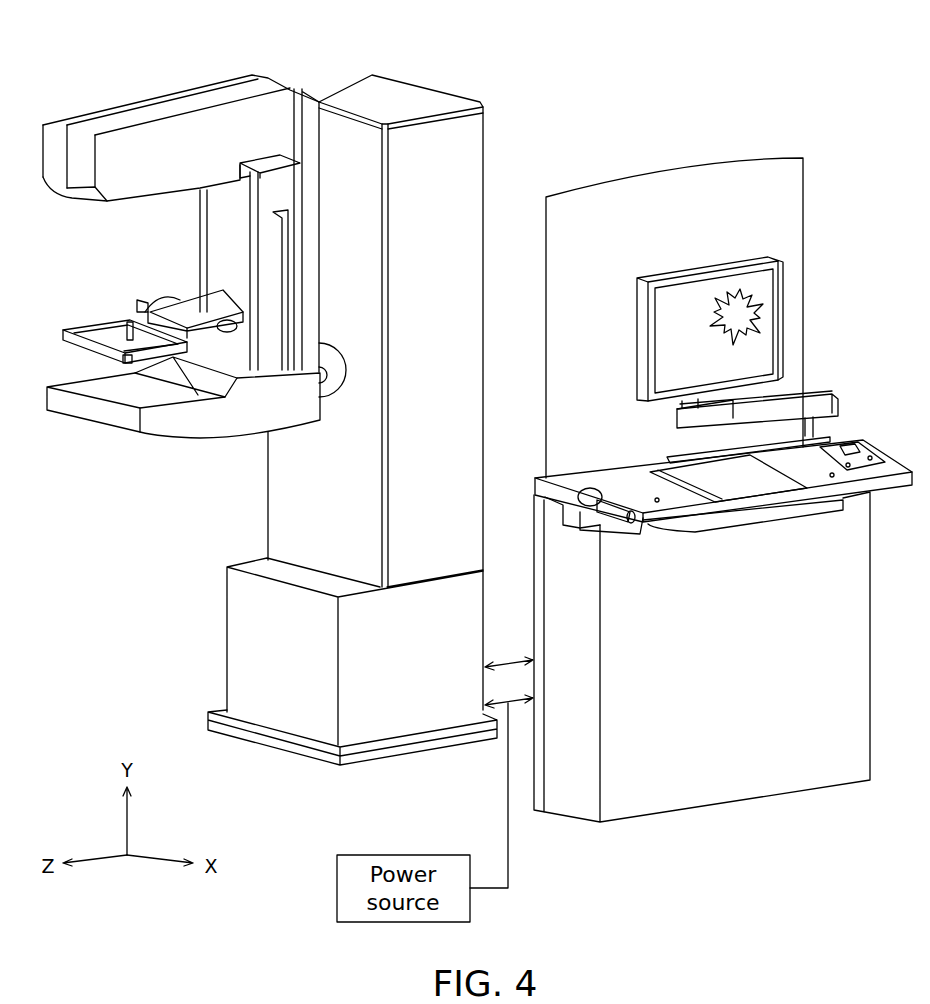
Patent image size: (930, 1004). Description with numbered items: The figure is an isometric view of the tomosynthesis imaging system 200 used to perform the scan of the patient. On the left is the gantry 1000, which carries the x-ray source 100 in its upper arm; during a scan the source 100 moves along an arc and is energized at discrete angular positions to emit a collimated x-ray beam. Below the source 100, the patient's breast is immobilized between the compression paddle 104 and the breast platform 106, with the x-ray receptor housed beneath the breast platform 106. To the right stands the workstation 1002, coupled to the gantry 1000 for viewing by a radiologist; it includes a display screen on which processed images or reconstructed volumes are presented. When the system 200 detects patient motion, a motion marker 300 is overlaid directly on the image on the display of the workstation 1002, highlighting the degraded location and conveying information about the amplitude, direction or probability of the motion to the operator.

The x-ray source 100 is at (91, 112).
The gantry 1000 is at (403, 97).
The compression paddle 104 is at (63, 330).
The breast platform 106 is at (77, 404).
The system 200 is at (569, 120).
The workstation 1002 is at (705, 267).
The motion marker 300 is at (762, 314).